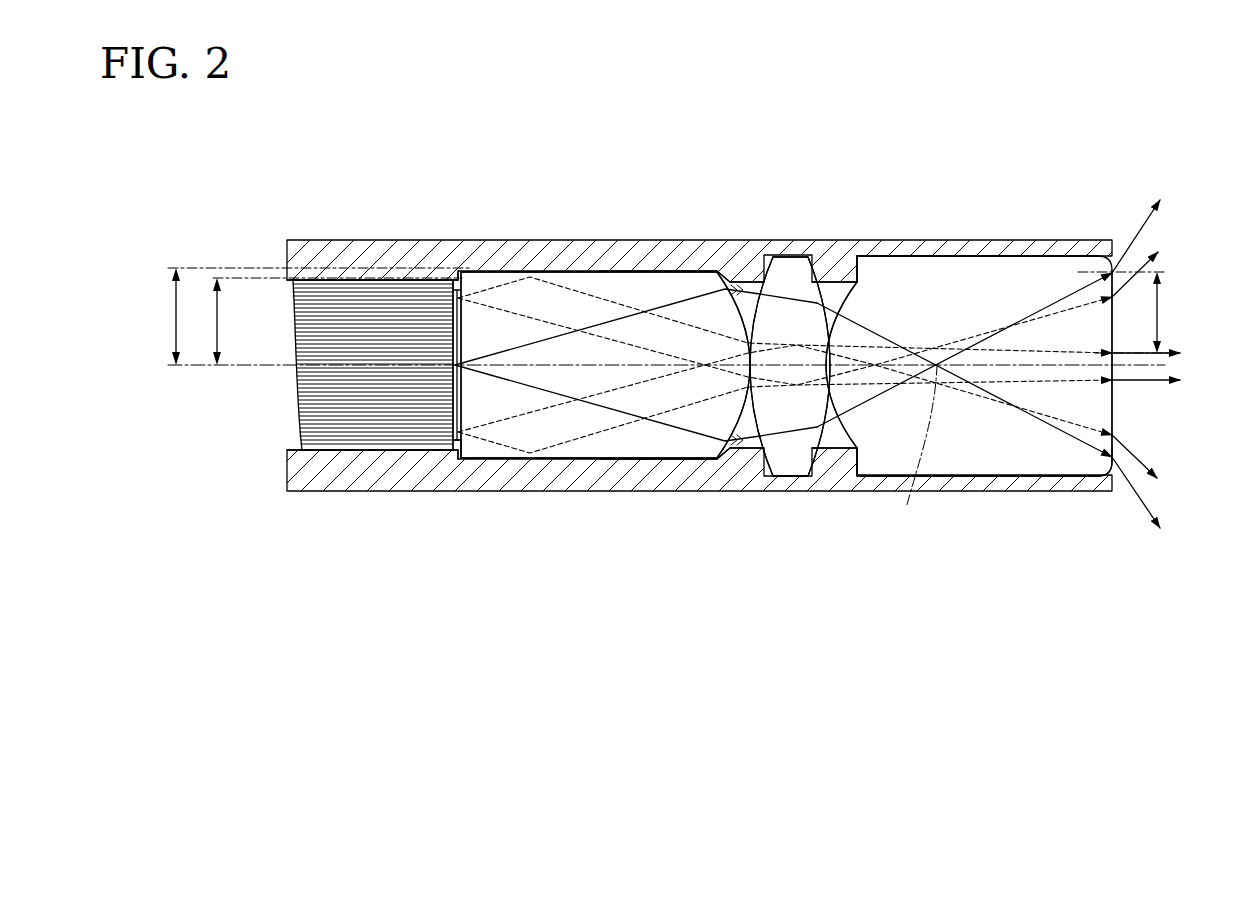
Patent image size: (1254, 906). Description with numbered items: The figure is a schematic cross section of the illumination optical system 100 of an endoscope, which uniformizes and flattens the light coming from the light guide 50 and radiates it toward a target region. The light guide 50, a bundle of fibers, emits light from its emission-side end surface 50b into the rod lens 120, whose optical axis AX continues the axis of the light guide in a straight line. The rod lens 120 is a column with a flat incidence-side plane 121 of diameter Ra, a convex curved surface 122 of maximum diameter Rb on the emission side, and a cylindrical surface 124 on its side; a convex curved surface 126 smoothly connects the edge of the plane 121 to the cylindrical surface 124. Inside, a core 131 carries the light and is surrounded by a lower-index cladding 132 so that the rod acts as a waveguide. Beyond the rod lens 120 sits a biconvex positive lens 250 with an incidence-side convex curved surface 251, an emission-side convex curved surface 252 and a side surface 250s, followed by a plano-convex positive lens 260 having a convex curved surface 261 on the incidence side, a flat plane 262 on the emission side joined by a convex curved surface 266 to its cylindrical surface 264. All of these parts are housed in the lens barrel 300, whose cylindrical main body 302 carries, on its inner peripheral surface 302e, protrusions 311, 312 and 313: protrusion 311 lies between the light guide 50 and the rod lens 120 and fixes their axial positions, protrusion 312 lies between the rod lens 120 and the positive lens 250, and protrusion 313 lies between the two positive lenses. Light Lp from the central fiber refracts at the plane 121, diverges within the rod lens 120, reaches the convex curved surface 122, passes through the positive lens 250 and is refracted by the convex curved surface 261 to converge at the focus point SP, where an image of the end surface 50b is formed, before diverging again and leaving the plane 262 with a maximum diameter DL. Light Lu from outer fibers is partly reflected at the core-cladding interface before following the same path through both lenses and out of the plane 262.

The illumination optical system 100 is at (735, 180).
The light guide 50 is at (325, 280).
The end surface of the light guide on the emission side 50b is at (456, 414).
The rod lens 120 is at (604, 283).
The plane 121 is at (453, 327).
The convex curved surface 122 is at (736, 445).
The cylindrical surface 124 is at (596, 463).
The convex curved surface 126 is at (459, 466).
The core 131 is at (642, 286).
The cladding 132 is at (678, 271).
The positive lens 250 is at (783, 270).
The side surface of the positive lens 250s is at (786, 478).
The convex curved surface 251 is at (765, 467).
The convex curved surface 252 is at (810, 467).
The positive lens 260 is at (927, 270).
The convex curved surface 261 is at (857, 466).
The plane 262 is at (1117, 407).
The cylindrical surface 264 is at (955, 478).
The convex curved surface 266 is at (1112, 468).
The lens barrel 300 is at (1000, 245).
The main body 302 is at (345, 250).
The inner peripheral surface 302e is at (384, 290).
The protrusion 311 is at (467, 292).
The protrusion 312 is at (748, 283).
The protrusion 313 is at (838, 286).
The optical axis AX is at (1053, 368).
The focus point SP is at (915, 450).
The maximum diameter of the light Lp on the plane DL is at (1139, 312).
The diameter of the plane Ra is at (175, 327).
The maximum diameter of the convex curved surface Rb is at (217, 325).
The light Lp is at (520, 345).
The light Lu is at (577, 283).